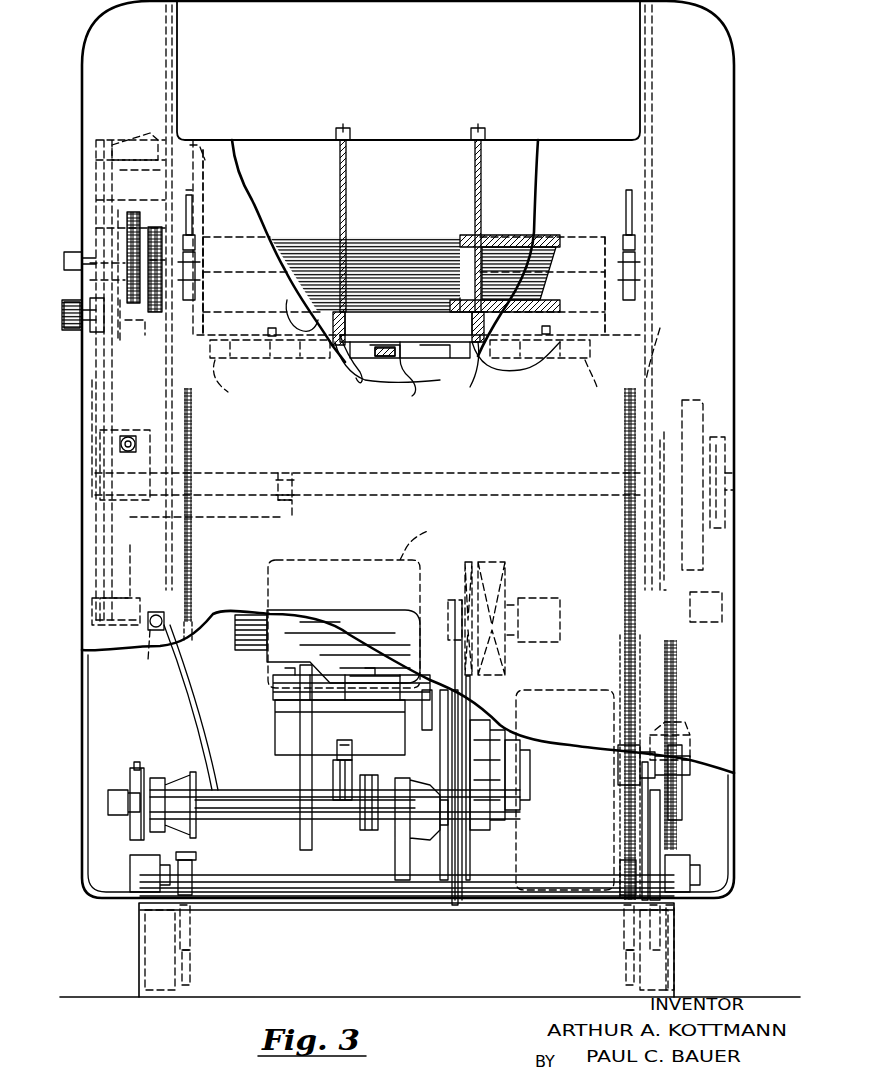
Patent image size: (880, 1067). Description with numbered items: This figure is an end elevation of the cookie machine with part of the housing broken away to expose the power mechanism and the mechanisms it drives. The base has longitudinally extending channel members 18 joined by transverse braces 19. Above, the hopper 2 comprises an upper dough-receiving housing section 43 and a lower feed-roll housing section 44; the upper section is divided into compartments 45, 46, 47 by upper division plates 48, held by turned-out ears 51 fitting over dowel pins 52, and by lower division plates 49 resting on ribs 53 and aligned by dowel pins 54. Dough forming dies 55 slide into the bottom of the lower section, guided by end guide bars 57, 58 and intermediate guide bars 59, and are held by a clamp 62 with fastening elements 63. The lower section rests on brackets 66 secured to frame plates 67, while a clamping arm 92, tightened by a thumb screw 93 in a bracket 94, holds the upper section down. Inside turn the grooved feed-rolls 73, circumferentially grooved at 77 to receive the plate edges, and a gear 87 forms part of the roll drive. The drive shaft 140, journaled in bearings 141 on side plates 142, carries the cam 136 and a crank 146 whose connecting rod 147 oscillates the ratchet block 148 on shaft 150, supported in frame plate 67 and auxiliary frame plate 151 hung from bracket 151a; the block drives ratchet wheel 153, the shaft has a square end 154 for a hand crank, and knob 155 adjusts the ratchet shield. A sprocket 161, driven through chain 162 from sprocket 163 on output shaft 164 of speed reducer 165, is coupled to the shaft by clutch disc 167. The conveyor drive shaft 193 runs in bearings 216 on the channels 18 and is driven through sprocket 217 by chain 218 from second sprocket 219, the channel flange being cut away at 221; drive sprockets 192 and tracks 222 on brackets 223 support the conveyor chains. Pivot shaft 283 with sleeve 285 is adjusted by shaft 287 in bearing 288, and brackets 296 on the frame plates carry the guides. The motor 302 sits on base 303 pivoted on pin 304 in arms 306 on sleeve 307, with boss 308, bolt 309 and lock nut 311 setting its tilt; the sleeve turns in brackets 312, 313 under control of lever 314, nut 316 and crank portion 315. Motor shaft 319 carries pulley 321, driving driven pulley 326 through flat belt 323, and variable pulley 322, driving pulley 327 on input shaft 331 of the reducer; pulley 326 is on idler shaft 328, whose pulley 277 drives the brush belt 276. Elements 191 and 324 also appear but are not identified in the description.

The hopper 2 is at (421, 96).
The channel members 18 is at (139, 940).
The transverse braces 19 is at (450, 998).
The upper housing section 43 is at (258, 140).
The lower housing section 44 is at (296, 378).
The compartment 45 is at (298, 200).
The compartment 46 is at (416, 196).
The compartment 47 is at (505, 196).
The upper transverse division plates 48 is at (341, 138).
The lower transverse division plates 49 is at (348, 300).
The ears 51 is at (350, 130).
The dowel pins 52 is at (345, 128).
The ribs 53 is at (364, 362).
The dowel pins 54 is at (287, 302).
The dough forming dies 55 is at (412, 370).
The guide bar 57 is at (232, 392).
The guide bar 58 is at (596, 382).
The intermediate guide bars 59 is at (356, 364).
The clamp 62 is at (266, 332).
The fastening elements 63 is at (250, 360).
The brackets 66 is at (205, 330).
The frame plates 67 is at (166, 48).
The feed-rolls 73 is at (378, 250).
The circumferential grooves 77 is at (480, 248).
The gear 87 is at (155, 318).
The clamping arm 92 is at (196, 230).
The thumb screw 93 is at (192, 196).
The bracket 94 is at (196, 212).
The cam 136 is at (703, 420).
The drive shaft 140 is at (448, 472).
The bearings 141 is at (192, 478).
The side plates 142 is at (160, 540).
The crank 146 is at (122, 500).
The connecting rod 147 is at (92, 398).
The oscillating block 148 is at (145, 226).
The shaft 150 is at (64, 262).
The auxiliary frame plate 151 is at (95, 178).
The bracket 151a is at (122, 140).
The ratchet wheel 153 is at (135, 210).
The square end 154 is at (95, 230).
The knob 155 is at (62, 306).
The sprocket 161 is at (664, 430).
The chain 162 is at (678, 690).
The sprocket 163 is at (682, 800).
The output shaft 164 is at (688, 768).
The speed reducing mechanism 165 is at (596, 754).
The disc 167 is at (726, 452).
The sprocket 191 is at (192, 600).
The drive sprocket 192 is at (200, 880).
The drive shaft 193 is at (322, 880).
The bearings 216 is at (138, 868).
The sprocket 217 is at (676, 930).
The chain 218 is at (660, 848).
The second sprocket 219 is at (672, 722).
The cut away 221 is at (662, 912).
The tracks 222 is at (192, 948).
The supporting brackets 223 is at (192, 985).
The connecting belt 276 is at (137, 760).
The pulley 277 is at (130, 796).
The pivot shaft 283 is at (292, 478).
The sleeve 285 is at (270, 512).
The shaft 287 is at (122, 446).
The bearing 288 is at (118, 444).
The brackets 296 is at (92, 600).
The motor 302 is at (430, 530).
The base 303 is at (278, 712).
The pin 304 is at (333, 680).
The arms 306 is at (276, 740).
The sleeve 307 is at (290, 820).
The elongated boss 308 is at (352, 812).
The bolt 309 is at (336, 744).
The lock nut 311 is at (334, 764).
The bracket 312 is at (192, 836).
The bracket 313 is at (395, 853).
The lever 314 is at (190, 710).
The portion 315 is at (146, 628).
The threaded nut 316 is at (150, 655).
The motor shaft 319 is at (420, 616).
The conventional pulley 321 is at (465, 568).
The variable diameter pulley 322 is at (510, 580).
The flat belt 323 is at (450, 716).
The plate 324 is at (492, 720).
The conventional driven pulley 326 is at (438, 890).
The pulley 327 is at (495, 822).
The idler shaft 328 is at (106, 803).
The input shaft 331 is at (522, 758).